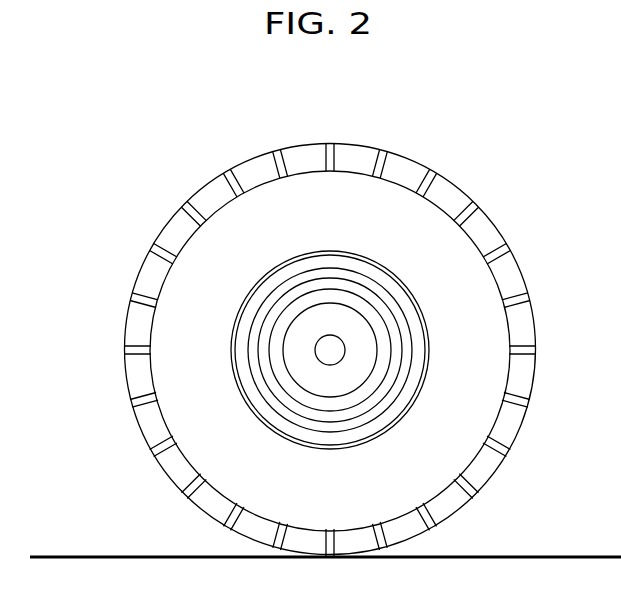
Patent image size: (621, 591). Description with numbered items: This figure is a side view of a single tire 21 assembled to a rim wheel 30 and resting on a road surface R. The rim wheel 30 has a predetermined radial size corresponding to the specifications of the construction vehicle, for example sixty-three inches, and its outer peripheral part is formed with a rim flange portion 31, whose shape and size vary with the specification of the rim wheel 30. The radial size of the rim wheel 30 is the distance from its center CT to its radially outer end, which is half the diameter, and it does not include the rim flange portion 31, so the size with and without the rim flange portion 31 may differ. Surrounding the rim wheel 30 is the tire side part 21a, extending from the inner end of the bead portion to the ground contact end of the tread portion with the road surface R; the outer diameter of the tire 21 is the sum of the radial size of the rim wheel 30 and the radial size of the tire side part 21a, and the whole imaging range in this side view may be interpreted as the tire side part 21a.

The tire 21 is at (504, 229).
The tire side part 21a is at (344, 212).
The rim wheel 30 is at (367, 350).
The rim flange portion 31 is at (412, 303).
The center of the rim wheel CT is at (330, 350).
The road surface R is at (587, 556).